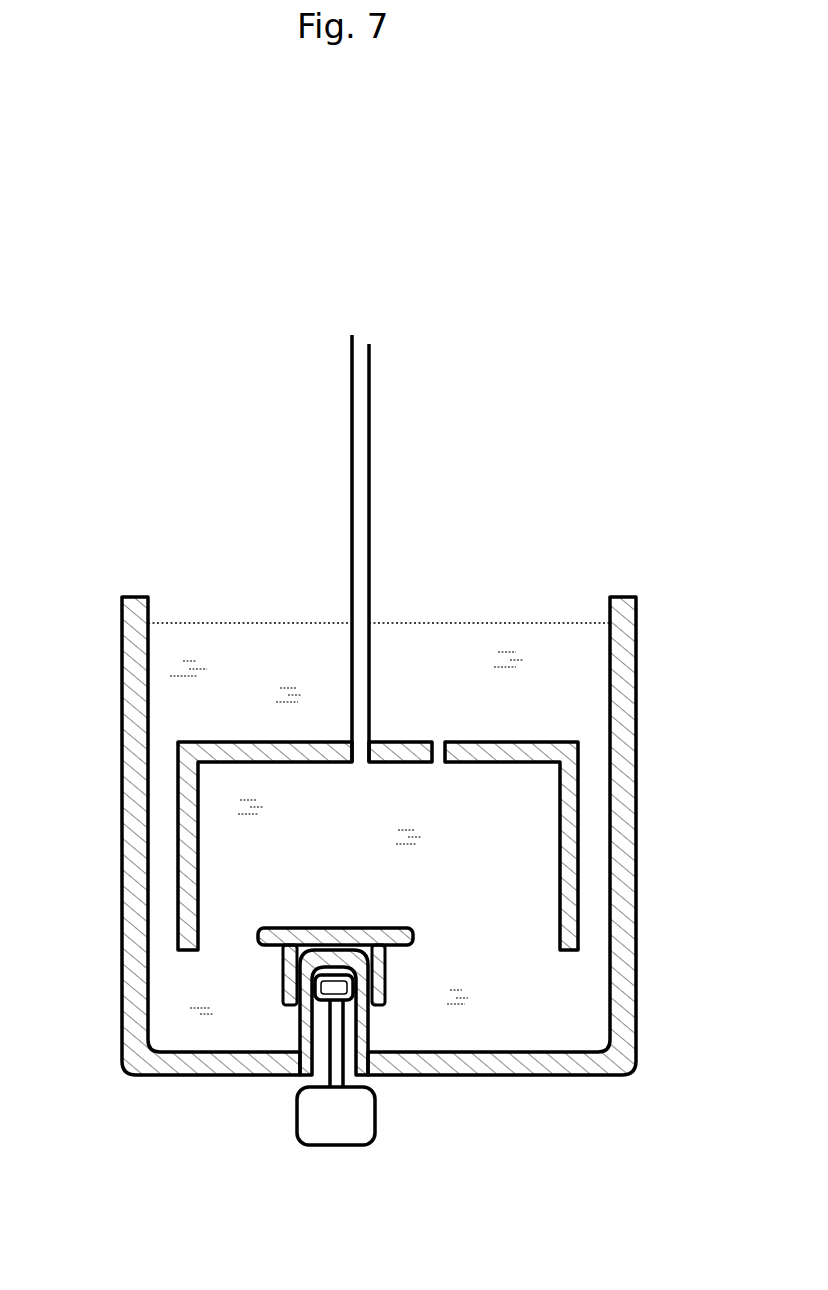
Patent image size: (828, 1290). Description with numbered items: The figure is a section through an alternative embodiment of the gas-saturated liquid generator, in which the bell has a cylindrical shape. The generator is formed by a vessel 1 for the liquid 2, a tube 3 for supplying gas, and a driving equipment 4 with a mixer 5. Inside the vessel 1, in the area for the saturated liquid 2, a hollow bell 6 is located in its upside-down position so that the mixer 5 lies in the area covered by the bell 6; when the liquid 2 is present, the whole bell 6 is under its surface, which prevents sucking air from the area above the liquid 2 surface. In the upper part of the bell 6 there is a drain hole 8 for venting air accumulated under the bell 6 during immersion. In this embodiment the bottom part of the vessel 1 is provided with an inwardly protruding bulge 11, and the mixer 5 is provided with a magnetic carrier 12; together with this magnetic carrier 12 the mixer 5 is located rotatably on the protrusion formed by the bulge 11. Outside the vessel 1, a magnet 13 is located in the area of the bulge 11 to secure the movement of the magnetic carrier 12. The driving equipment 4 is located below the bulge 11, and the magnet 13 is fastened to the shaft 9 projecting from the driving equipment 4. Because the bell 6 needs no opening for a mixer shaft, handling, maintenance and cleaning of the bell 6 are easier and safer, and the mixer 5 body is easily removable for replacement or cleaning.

The vessel 1 is at (625, 645).
The liquid 2 is at (575, 996).
The tube 3 is at (360, 413).
The driving equipment 4 is at (322, 1121).
The mixer 5 is at (258, 948).
The bell 6 is at (180, 806).
The drain hole 8 is at (440, 746).
The shaft 9 is at (345, 1072).
The bulge 11 is at (300, 1040).
The magnetic carrier 12 is at (283, 975).
The magnet 13 is at (355, 1000).